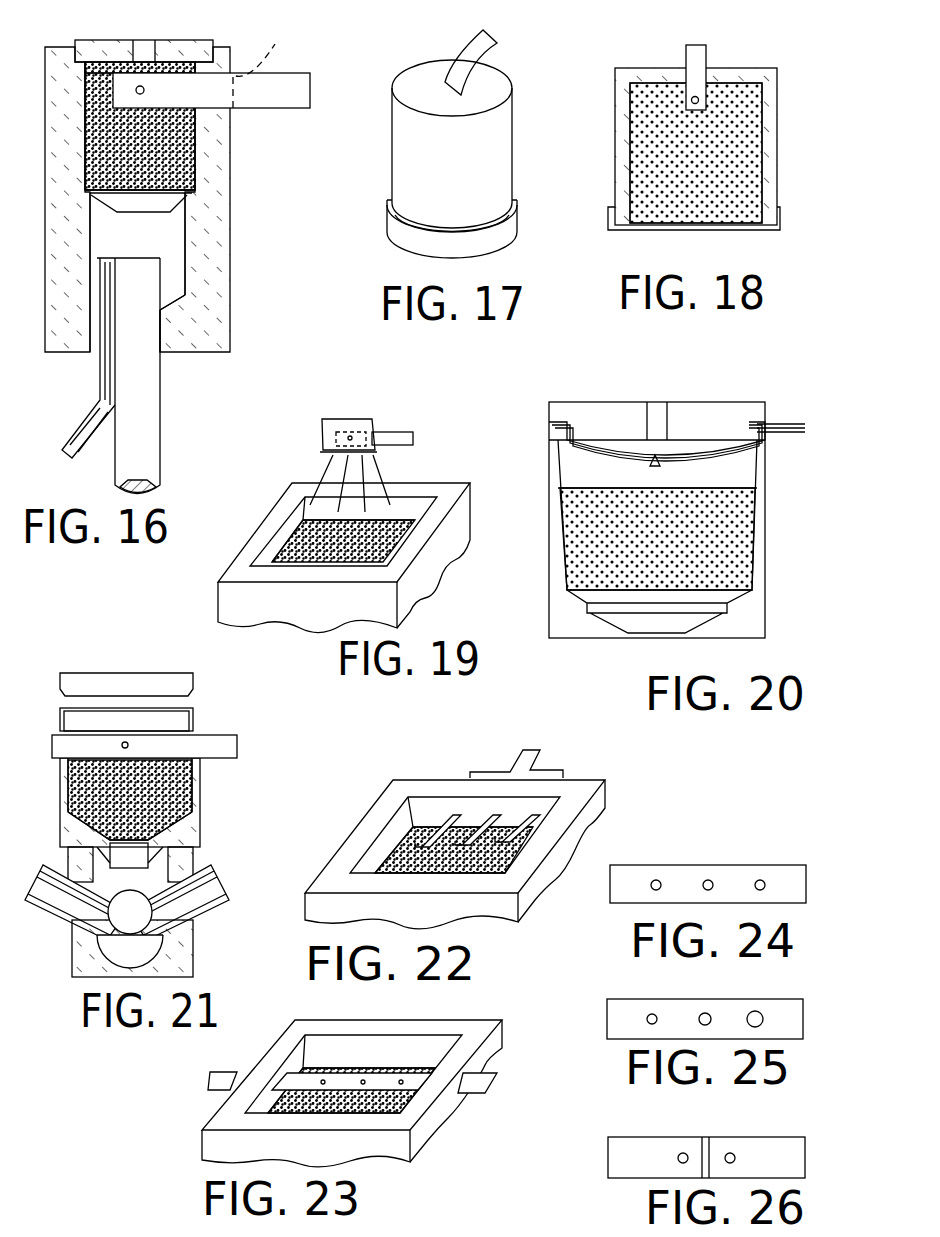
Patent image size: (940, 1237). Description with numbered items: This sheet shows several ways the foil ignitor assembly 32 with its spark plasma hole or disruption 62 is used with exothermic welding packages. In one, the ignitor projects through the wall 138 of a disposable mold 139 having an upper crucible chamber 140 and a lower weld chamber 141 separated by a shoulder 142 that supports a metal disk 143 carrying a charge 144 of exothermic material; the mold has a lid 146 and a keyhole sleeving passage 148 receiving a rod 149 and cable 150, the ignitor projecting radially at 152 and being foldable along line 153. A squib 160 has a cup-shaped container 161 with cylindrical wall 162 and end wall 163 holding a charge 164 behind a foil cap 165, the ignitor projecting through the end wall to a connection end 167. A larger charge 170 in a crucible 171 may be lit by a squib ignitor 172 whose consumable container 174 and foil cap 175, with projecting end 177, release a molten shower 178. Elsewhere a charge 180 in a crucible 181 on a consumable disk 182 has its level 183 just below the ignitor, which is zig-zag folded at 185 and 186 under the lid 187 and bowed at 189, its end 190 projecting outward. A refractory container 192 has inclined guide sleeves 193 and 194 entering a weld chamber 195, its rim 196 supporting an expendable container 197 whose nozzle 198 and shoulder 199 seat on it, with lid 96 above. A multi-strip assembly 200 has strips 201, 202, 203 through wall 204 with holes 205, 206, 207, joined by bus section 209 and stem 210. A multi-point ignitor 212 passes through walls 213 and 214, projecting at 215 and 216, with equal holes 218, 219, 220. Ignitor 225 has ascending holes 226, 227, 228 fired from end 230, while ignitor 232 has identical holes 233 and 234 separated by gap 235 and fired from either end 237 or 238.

In FIG. 16, the ignitor assembly 32 is at (253, 60).
In FIG. 17, the ignitor assembly 32 is at (457, 25).
In FIG. 18, the ignitor assembly 32 is at (720, 40).
In FIG. 19, the ignitor assembly 32 is at (396, 425).
In FIG. 20, the ignitor assembly 32 is at (773, 403).
In FIG. 21, the ignitor assembly 32 is at (208, 726).
In FIG. 16, the hole or disruption 62 is at (137, 87).
In FIG. 18, the hole or disruption 62 is at (690, 100).
In FIG. 19, the hole or disruption 62 is at (347, 415).
In FIG. 20, the hole or disruption 62 is at (655, 468).
In FIG. 21, the hole or disruption 62 is at (125, 742).
In FIG. 21, the lid or top 96 is at (97, 681).
In FIG. 16, the wall 138 is at (227, 117).
In FIG. 16, the disposable or expendable mold 139 is at (235, 215).
In FIG. 16, the upper crucible chamber 140 is at (205, 132).
In FIG. 16, the lower weld chamber 141 is at (172, 238).
In FIG. 16, the shoulder 142 is at (200, 196).
In FIG. 16, the metal disk 143 is at (162, 202).
In FIG. 16, the charge of exothermic material 144 is at (180, 150).
In FIG. 16, the lid 146 is at (160, 40).
In FIG. 16, the keyhole sleeving passage 148 is at (162, 340).
In FIG. 16, the rod 149 is at (143, 385).
In FIG. 16, the cable 150 is at (100, 373).
In FIG. 16, the projecting outer end 152 is at (292, 92).
In FIG. 16, the fold line 153 is at (266, 67).
In FIG. 17, the squib 160 is at (468, 133).
In FIG. 18, the squib 160 is at (693, 134).
In FIG. 17, the cup-shaped container 161 is at (503, 135).
In FIG. 18, the cup-shaped container 161 is at (777, 145).
In FIG. 18, the cylindrical wall 162 is at (775, 183).
In FIG. 17, the end wall 163 is at (410, 82).
In FIG. 18, the end wall 163 is at (733, 70).
In FIG. 18, the charge of exothermic material 164 is at (662, 168).
In FIG. 17, the thin metal foil cap 165 is at (503, 232).
In FIG. 18, the thin metal foil cap 165 is at (748, 232).
In FIG. 17, the free or connection end 167 is at (487, 40).
In FIG. 18, the free or connection end 167 is at (696, 43).
In FIG. 19, the larger charge of exothermic material 170 is at (397, 523).
In FIG. 22, the larger charge of exothermic material 170 is at (405, 855).
In FIG. 23, the larger charge of exothermic material 170 is at (393, 1102).
In FIG. 19, the larger crucible 171 is at (440, 552).
In FIG. 22, the larger crucible 171 is at (580, 797).
In FIG. 23, the larger crucible 171 is at (477, 1022).
In FIG. 19, the squib ignitor 172 is at (372, 405).
In FIG. 19, the shaped consumable container 174 is at (328, 432).
In FIG. 19, the thin metal foil cap 175 is at (326, 452).
In FIG. 19, the projecting end 177 is at (413, 437).
In FIG. 19, the molten metal shower 178 is at (323, 487).
In FIG. 20, the charge of exothermic material 180 is at (727, 540).
In FIG. 20, the expendable crucible or container 181 is at (748, 608).
In FIG. 20, the consumable disk 182 is at (662, 637).
In FIG. 20, the upper level 183 is at (727, 488).
In FIG. 20, the zig-zag fold 185 is at (555, 437).
In FIG. 20, the zig-zag fold 186 is at (763, 441).
In FIG. 20, the lid 187 is at (607, 415).
In FIG. 20, the bowed central portion 189 is at (697, 452).
In FIG. 20, the ignitor end 190 is at (815, 403).
In FIG. 21, the disposable refractory container 192 is at (55, 953).
In FIG. 21, the inclined metal guide sleeve 193 is at (58, 921).
In FIG. 21, the inclined metal guide sleeve 194 is at (205, 913).
In FIG. 21, the weld chamber 195 is at (143, 950).
In FIG. 21, the annular rim 196 is at (68, 821).
In FIG. 21, the expendable container 197 is at (210, 790).
In FIG. 21, the annular spout or nozzle 198 is at (68, 858).
In FIG. 21, the annular shoulder 199 is at (193, 857).
In FIG. 22, the ignitor assembly 200 is at (560, 756).
In FIG. 22, the ignitor strip assembly 201 is at (440, 818).
In FIG. 22, the ignitor strip assembly 202 is at (480, 833).
In FIG. 22, the ignitor strip assembly 203 is at (560, 823).
In FIG. 22, the wall 204 is at (575, 788).
In FIG. 22, the hole or disruption 205 is at (427, 847).
In FIG. 22, the hole or disruption 206 is at (463, 840).
In FIG. 22, the hole or disruption 207 is at (513, 837).
In FIG. 22, the bus section 209 is at (493, 770).
In FIG. 22, the projecting stem 210 is at (563, 717).
In FIG. 23, the multi-point ignitor assembly 212 is at (391, 1052).
In FIG. 24, the multi-point ignitor assembly 212 is at (747, 855).
In FIG. 23, the wall 213 is at (443, 1103).
In FIG. 23, the wall 214 is at (293, 1063).
In FIG. 23, the projecting end 215 is at (482, 1085).
In FIG. 23, the projecting end 216 is at (228, 1080).
In FIG. 23, the hole or disruption 218 is at (323, 1081).
In FIG. 24, the hole or disruption 218 is at (657, 880).
In FIG. 23, the hole or disruption 219 is at (363, 1081).
In FIG. 24, the hole or disruption 219 is at (708, 880).
In FIG. 23, the hole or disruption 220 is at (400, 1081).
In FIG. 24, the hole or disruption 220 is at (760, 880).
In FIG. 25, the ignitor assembly 225 is at (762, 993).
In FIG. 25, the hole or site 226 is at (652, 1018).
In FIG. 25, the hole or site 227 is at (702, 1013).
In FIG. 25, the hole or site 228 is at (755, 1010).
In FIG. 25, the end 230 is at (613, 1018).
In FIG. 26, the ignitor assembly 232 is at (762, 1128).
In FIG. 26, the hole 233 is at (680, 1157).
In FIG. 26, the hole 234 is at (730, 1155).
In FIG. 26, the gap 235 is at (705, 1137).
In FIG. 26, the end 237 is at (628, 1160).
In FIG. 26, the end 238 is at (797, 1163).